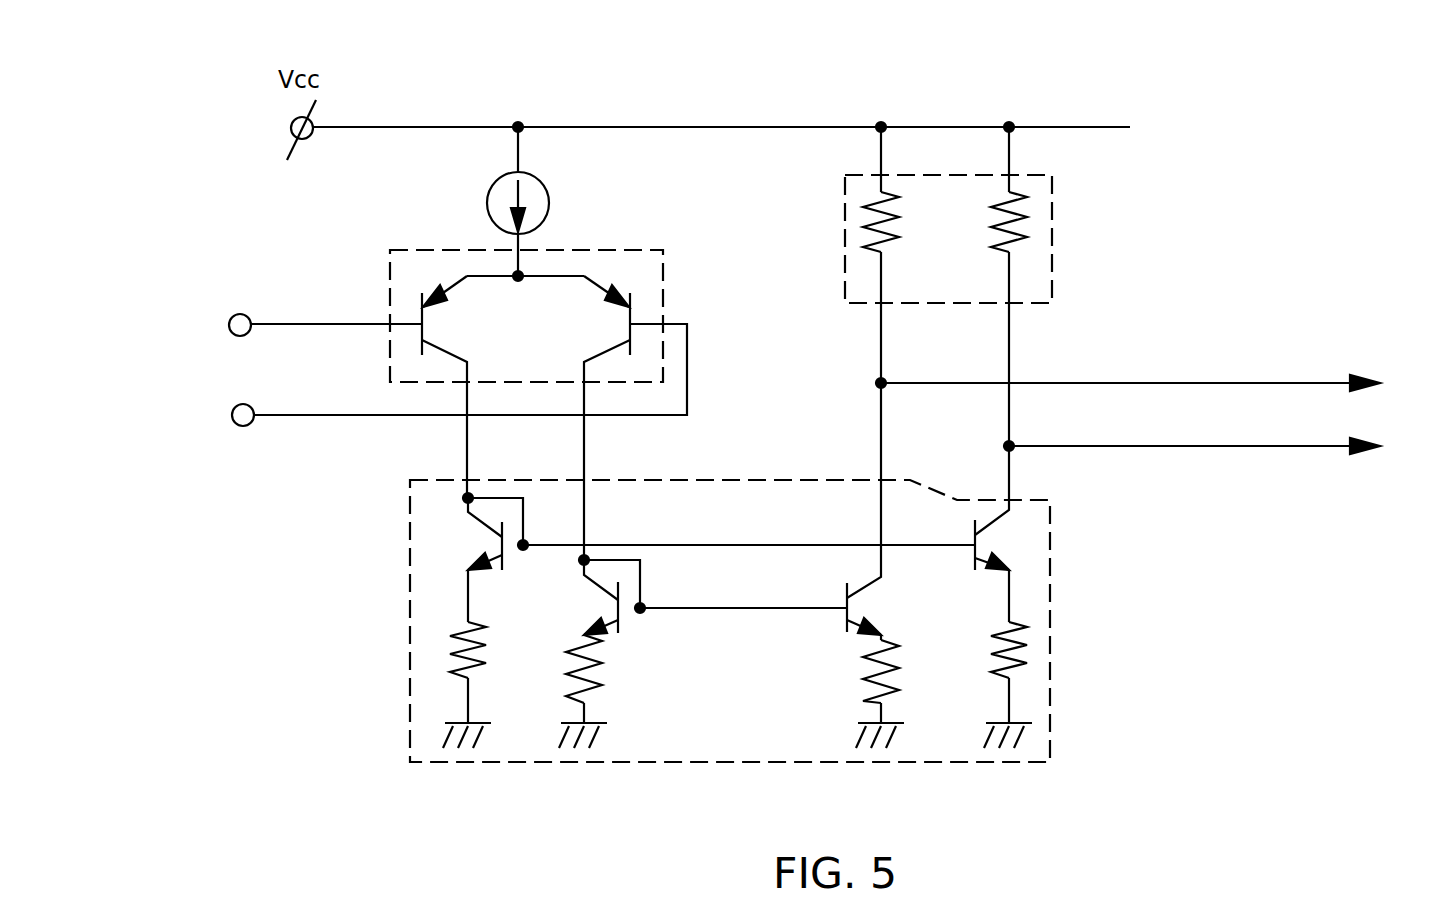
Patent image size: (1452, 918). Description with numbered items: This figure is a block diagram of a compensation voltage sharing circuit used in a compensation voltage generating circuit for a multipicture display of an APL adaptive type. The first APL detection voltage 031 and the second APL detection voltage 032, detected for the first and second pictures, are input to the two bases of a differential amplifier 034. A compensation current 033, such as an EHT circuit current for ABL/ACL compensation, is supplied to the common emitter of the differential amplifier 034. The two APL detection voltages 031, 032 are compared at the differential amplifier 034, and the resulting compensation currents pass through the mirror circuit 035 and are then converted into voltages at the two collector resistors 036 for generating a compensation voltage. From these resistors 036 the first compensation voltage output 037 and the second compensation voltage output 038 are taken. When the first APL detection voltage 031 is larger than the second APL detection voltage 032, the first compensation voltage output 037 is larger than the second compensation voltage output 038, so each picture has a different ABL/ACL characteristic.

The first APL detection voltage 031 is at (237, 314).
The second APL detection voltage 032 is at (247, 428).
The compensation current 033 is at (530, 173).
The differential amplifier 034 is at (610, 249).
The mirror circuit 035 is at (697, 762).
The collector resistors for generating a compensation voltage 036 is at (1030, 173).
The first compensation voltage output 037 is at (1313, 383).
The second compensation voltage output 038 is at (1250, 446).